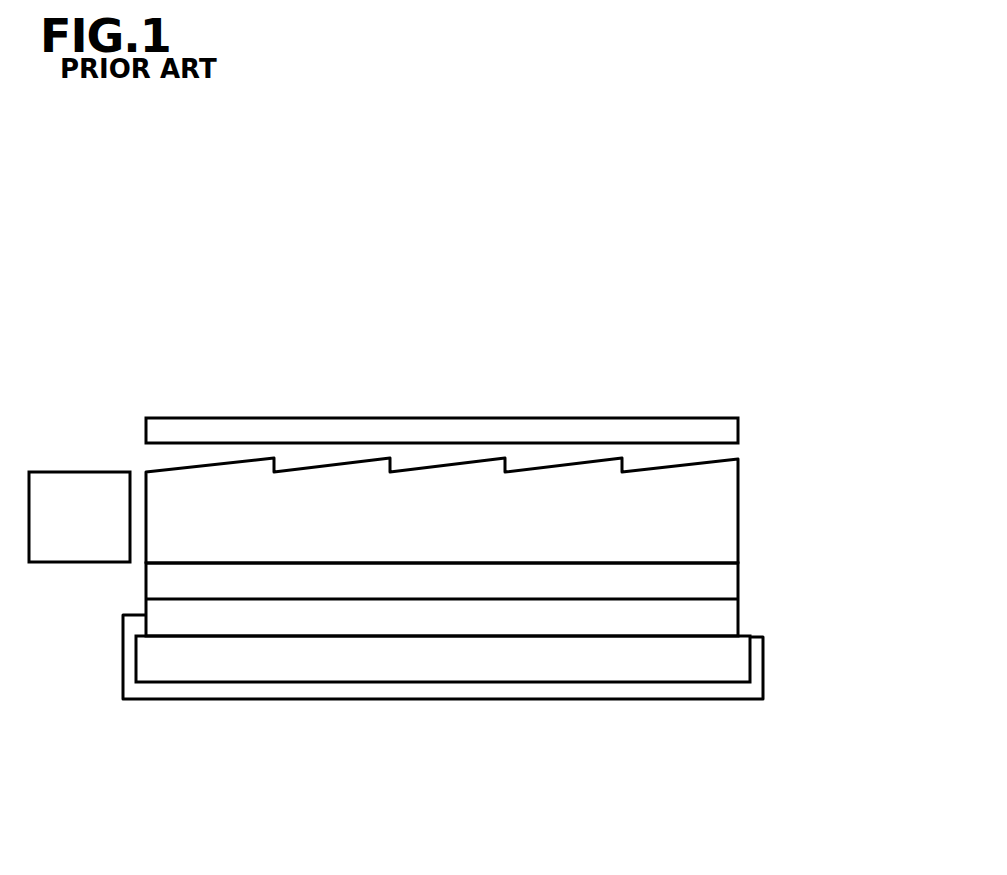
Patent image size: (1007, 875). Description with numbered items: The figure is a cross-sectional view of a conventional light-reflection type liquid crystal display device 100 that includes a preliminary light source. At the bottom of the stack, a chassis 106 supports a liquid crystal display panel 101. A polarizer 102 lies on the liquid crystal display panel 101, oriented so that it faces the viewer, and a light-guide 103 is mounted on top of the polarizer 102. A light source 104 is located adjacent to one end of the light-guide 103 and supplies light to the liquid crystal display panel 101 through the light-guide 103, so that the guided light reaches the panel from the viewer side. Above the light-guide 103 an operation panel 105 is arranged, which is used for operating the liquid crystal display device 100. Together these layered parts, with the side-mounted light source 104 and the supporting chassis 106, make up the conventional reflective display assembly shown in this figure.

The light-reflection type liquid crystal display device 100 is at (166, 323).
The liquid crystal display panel 101 is at (366, 653).
The polarizer 102 is at (738, 582).
The light-guide 103 is at (724, 499).
The light source 104 is at (55, 472).
The operation panel 105 is at (388, 428).
The chassis 106 is at (603, 698).